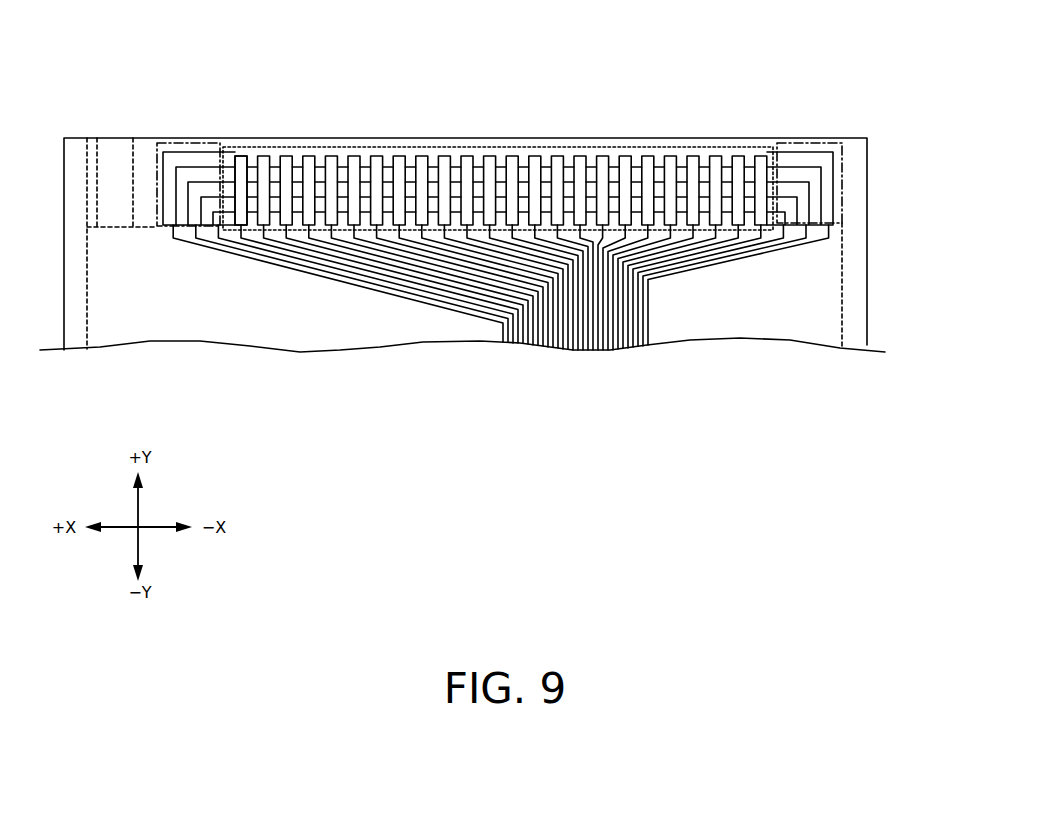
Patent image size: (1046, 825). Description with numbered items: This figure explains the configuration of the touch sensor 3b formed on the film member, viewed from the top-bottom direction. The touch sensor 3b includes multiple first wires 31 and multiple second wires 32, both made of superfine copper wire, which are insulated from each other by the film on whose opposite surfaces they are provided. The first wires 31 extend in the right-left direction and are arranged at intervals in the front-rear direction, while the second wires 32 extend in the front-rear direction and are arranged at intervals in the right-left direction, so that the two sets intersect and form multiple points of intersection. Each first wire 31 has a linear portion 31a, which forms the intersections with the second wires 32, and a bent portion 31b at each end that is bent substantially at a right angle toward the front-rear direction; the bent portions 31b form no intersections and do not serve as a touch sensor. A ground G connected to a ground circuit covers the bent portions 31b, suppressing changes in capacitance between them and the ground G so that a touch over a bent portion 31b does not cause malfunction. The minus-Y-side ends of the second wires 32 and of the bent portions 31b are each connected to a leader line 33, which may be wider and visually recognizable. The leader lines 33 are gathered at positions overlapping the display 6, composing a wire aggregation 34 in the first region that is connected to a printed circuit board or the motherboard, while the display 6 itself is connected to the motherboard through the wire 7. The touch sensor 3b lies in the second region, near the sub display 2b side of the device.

The sub display 2b is at (745, 147).
The touch sensor 3b is at (556, 140).
The display 6 is at (843, 278).
The wire 7 is at (98, 161).
The first wires 31 is at (843, 150).
The linear portion 31a is at (434, 156).
The bent portion 31b is at (545, 181).
The second wires 32 is at (241, 156).
The leader line 33 is at (813, 242).
The wire aggregation 34 is at (562, 320).
The ground G is at (188, 143).